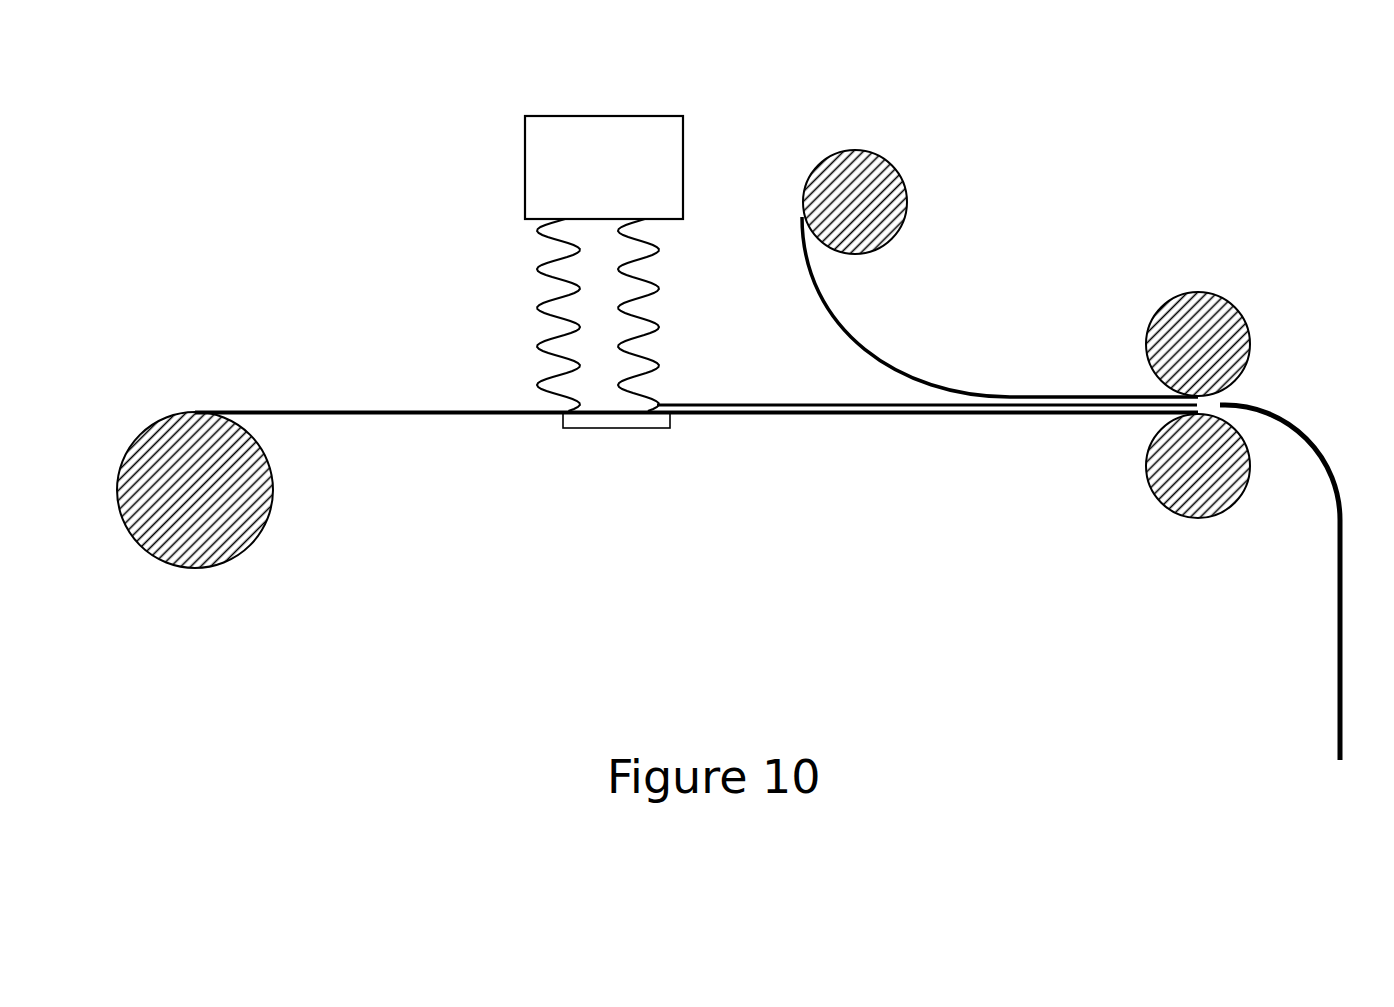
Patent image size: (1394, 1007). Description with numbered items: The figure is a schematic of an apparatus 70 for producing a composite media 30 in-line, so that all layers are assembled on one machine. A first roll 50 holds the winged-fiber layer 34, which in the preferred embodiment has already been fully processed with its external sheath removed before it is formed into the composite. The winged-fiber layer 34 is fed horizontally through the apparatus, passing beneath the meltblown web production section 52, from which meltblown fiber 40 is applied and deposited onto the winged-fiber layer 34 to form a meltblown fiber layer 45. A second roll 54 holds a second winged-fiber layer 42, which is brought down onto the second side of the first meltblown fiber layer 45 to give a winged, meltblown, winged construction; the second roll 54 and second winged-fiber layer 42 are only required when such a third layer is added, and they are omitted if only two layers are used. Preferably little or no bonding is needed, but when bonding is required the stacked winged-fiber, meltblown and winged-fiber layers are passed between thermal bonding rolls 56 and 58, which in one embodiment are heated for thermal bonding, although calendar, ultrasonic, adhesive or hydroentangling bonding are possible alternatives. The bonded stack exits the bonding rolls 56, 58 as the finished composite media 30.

The apparatus 70 is at (218, 243).
The meltblown web production section 52 is at (618, 153).
The meltblown fiber 40 is at (618, 285).
The winged-fiber layer 34 is at (420, 413).
The meltblown fiber layer 45 is at (761, 400).
The second winged-fiber layer 42 is at (895, 348).
The first roll 50 is at (195, 503).
The second roll 54 is at (870, 200).
The thermal bonding roll 56 is at (1200, 343).
The thermal bonding roll 58 is at (1196, 465).
The composite media 30 is at (1337, 603).